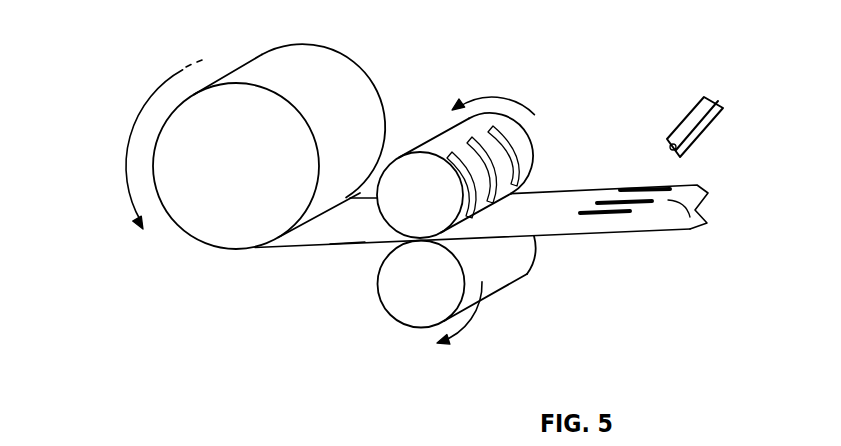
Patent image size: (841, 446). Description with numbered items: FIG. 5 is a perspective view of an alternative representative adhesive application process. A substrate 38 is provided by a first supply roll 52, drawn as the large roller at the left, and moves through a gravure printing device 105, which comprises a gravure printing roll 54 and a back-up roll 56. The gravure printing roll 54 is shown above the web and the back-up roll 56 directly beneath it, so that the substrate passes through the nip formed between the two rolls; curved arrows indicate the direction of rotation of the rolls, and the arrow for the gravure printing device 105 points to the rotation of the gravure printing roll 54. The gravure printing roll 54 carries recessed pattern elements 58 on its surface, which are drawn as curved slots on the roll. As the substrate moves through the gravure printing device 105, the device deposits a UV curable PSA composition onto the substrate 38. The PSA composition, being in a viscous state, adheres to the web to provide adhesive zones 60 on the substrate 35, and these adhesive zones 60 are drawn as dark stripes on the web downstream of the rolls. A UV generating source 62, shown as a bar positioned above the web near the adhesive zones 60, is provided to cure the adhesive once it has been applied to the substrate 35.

The substrate 35 is at (690, 225).
The substrate 38 is at (355, 234).
The first supply roll 52 is at (318, 68).
The gravure printing roll 54 is at (420, 152).
The back-up roll 56 is at (407, 328).
The slots / pattern elements 58 is at (523, 152).
The adhesive zones 60 is at (640, 187).
The UV generating source 62 is at (787, 60).
The gravure printing device 105 is at (527, 92).